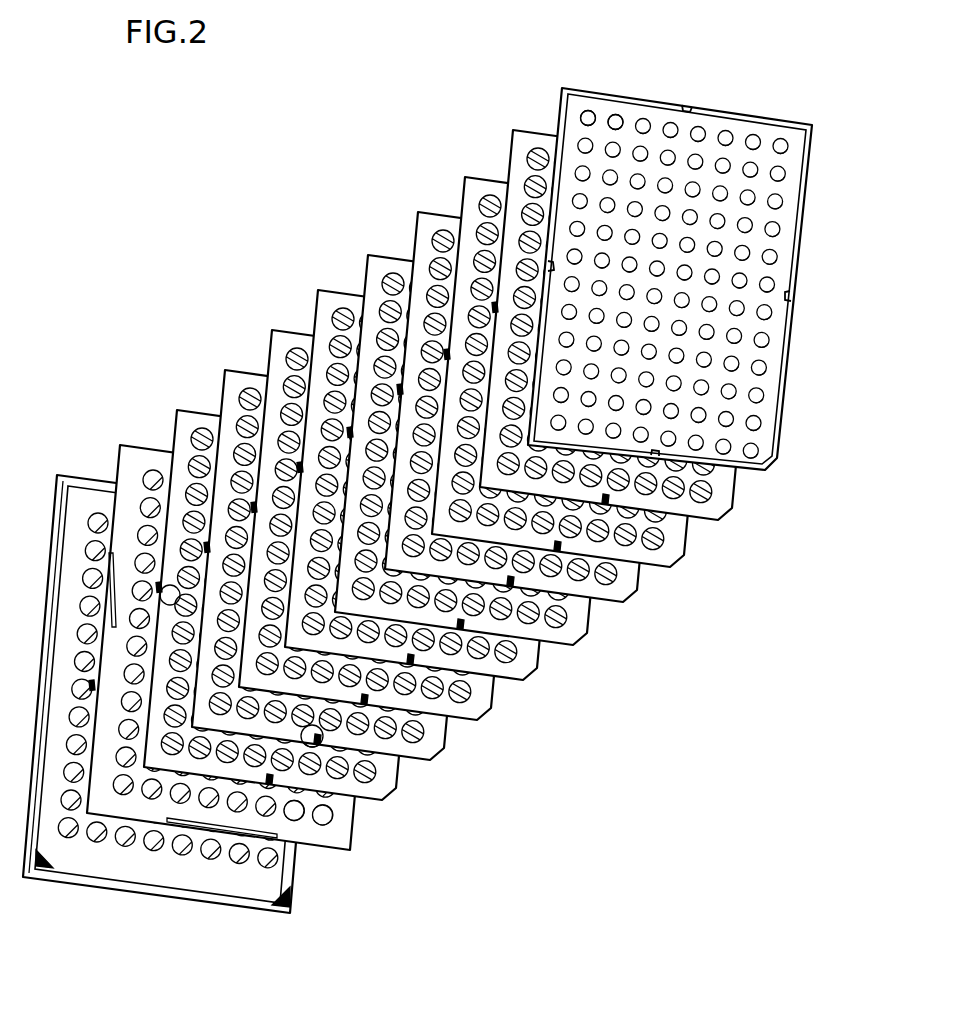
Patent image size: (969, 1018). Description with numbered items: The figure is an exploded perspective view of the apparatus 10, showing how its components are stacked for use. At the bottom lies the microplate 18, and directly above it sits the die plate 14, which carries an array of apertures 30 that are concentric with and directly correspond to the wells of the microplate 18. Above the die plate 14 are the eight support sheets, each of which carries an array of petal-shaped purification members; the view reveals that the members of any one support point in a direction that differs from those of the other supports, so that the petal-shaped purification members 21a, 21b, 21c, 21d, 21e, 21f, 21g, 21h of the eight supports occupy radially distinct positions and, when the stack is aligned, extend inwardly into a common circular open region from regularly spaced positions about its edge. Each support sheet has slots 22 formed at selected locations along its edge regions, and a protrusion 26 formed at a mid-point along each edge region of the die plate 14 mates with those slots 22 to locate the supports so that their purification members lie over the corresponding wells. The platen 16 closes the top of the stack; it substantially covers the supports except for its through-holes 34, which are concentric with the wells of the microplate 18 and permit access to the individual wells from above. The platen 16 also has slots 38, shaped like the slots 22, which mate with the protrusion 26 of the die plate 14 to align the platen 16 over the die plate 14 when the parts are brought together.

The apparatus 10 is at (275, 175).
The die plate 14 is at (138, 457).
The platen 16 is at (742, 127).
The microplate 18 is at (145, 863).
The petal-shaped purification member 21a is at (202, 437).
The petal-shaped purification member 21b is at (250, 397).
The petal-shaped purification member 21c is at (297, 358).
The petal-shaped purification member 21d is at (343, 318).
The petal-shaped purification member 21e is at (393, 277).
The petal-shaped purification member 21f is at (442, 238).
The petal-shaped purification member 21g is at (490, 198).
The petal-shaped purification member 21h is at (538, 157).
The slots 22 is at (167, 587).
The protrusion 26 is at (110, 610).
The apertures 30 is at (322, 825).
The through-holes 34 is at (616, 113).
The slots 38 is at (685, 104).